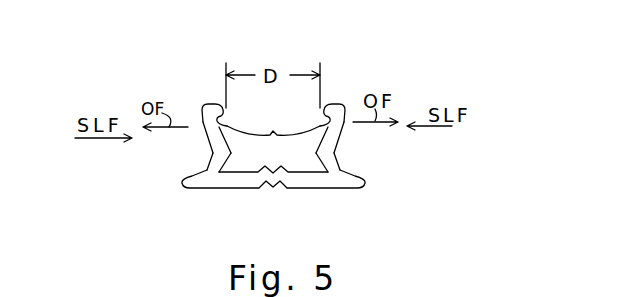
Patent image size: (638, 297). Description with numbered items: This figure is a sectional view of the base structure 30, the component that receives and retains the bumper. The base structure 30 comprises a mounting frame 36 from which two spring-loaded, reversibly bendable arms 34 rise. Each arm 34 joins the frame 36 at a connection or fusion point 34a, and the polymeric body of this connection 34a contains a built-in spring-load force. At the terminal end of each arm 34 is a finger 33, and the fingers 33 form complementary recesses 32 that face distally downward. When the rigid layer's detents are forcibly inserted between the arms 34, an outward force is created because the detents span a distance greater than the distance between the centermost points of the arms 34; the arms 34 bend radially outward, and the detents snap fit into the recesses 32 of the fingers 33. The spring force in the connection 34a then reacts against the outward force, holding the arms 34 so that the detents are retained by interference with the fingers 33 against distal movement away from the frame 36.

The base structure 30 is at (174, 88).
The recesses 32 is at (273, 144).
The fingers 33 is at (221, 108).
The arms 34 is at (207, 137).
The connection point 34a is at (206, 171).
The frame 36 is at (238, 188).